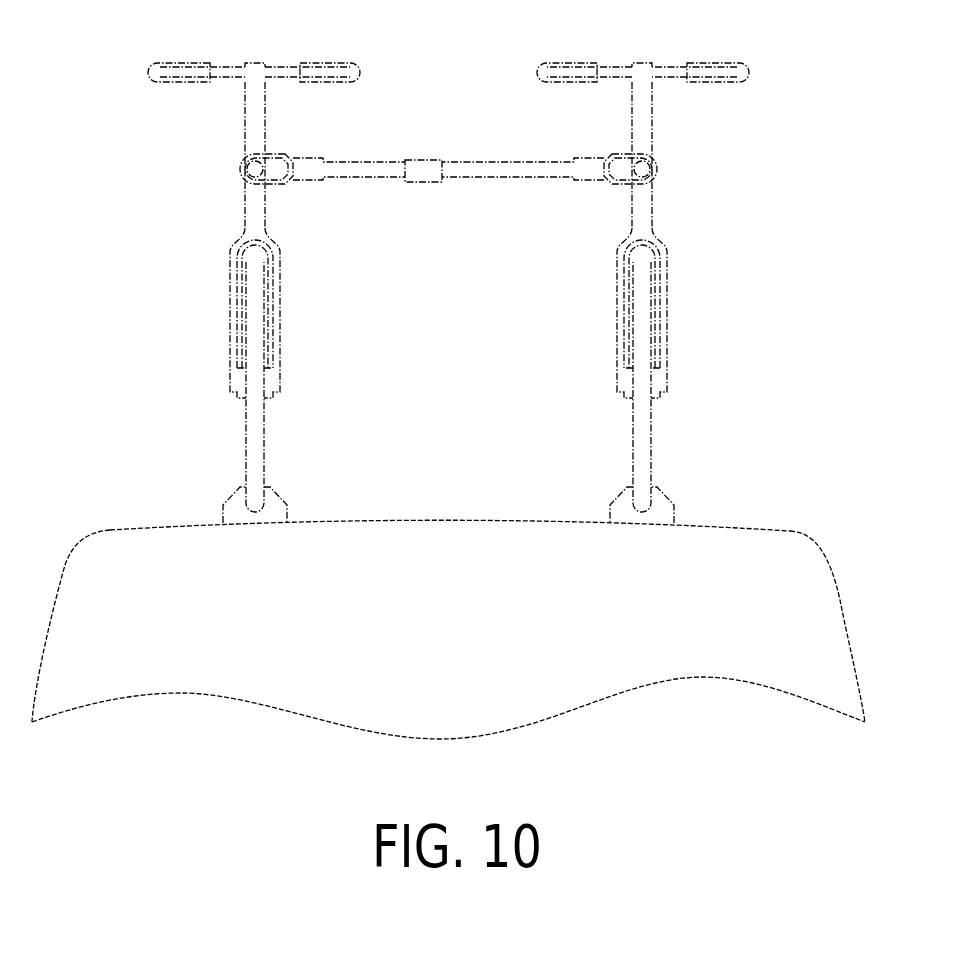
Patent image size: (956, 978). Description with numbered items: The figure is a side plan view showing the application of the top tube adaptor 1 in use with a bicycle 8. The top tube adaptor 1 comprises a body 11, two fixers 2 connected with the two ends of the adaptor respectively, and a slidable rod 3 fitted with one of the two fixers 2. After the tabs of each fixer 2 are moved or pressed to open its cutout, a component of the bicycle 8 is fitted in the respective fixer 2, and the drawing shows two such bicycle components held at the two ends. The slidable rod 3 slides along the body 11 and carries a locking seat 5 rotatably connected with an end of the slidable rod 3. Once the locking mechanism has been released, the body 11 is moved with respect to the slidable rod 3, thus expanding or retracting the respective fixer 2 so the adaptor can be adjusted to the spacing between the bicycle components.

The top tube adaptor 1 is at (433, 148).
The fixer 2 is at (278, 185).
The slidable rod 3 is at (517, 172).
The locking seat 5 is at (420, 183).
The bicycle 8 is at (168, 70).
The body 11 is at (360, 168).